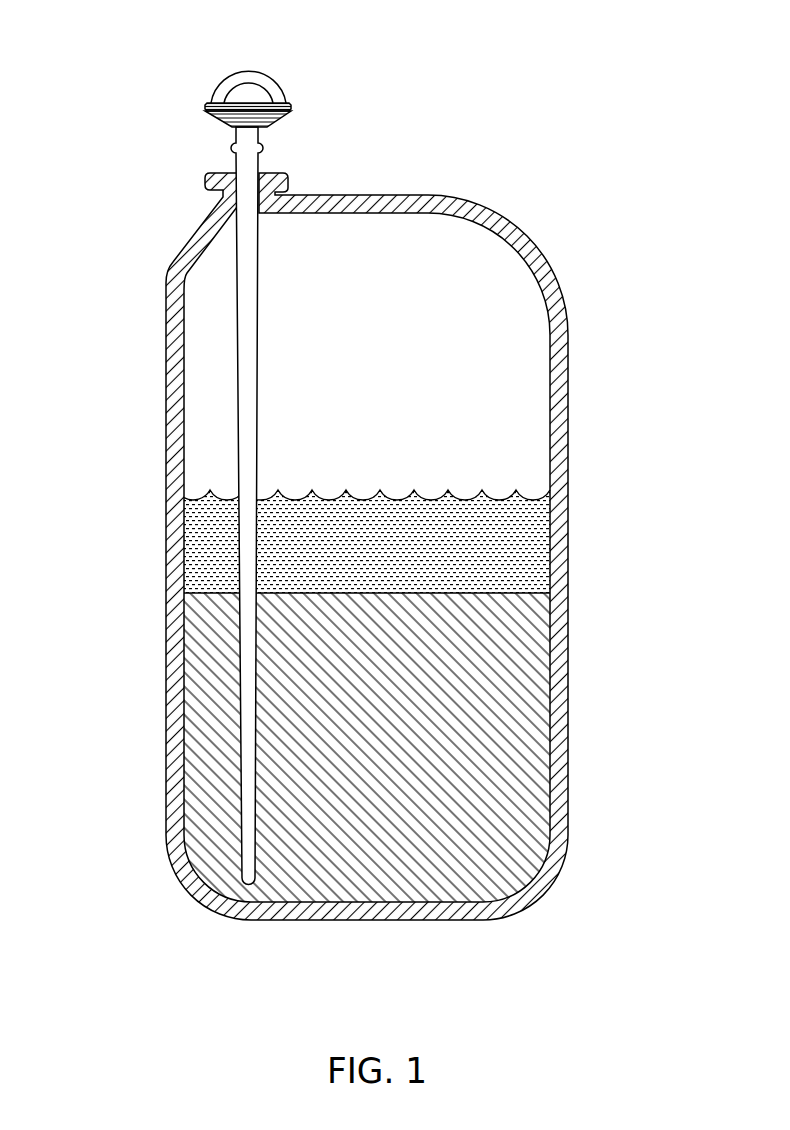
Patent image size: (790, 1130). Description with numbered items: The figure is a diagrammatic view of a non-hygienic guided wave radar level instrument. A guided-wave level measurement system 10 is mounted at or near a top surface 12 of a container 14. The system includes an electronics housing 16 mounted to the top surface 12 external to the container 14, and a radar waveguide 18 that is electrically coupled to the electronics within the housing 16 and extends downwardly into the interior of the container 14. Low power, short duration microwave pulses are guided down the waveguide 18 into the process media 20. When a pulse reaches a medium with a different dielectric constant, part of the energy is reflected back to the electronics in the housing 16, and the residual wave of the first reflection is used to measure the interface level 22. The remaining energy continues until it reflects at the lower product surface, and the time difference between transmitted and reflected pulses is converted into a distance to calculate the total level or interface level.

The guided-wave level measurement system 10 is at (283, 82).
The top surface 12 is at (356, 193).
The container 14 is at (513, 217).
The electronics housing 16 is at (218, 92).
The radar waveguide 18 is at (240, 462).
The process media 20 is at (391, 733).
The interface level 22 is at (508, 592).